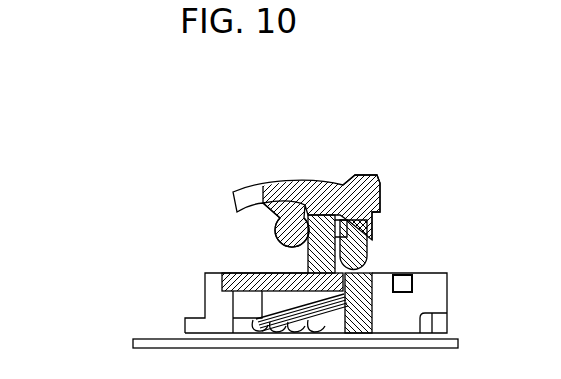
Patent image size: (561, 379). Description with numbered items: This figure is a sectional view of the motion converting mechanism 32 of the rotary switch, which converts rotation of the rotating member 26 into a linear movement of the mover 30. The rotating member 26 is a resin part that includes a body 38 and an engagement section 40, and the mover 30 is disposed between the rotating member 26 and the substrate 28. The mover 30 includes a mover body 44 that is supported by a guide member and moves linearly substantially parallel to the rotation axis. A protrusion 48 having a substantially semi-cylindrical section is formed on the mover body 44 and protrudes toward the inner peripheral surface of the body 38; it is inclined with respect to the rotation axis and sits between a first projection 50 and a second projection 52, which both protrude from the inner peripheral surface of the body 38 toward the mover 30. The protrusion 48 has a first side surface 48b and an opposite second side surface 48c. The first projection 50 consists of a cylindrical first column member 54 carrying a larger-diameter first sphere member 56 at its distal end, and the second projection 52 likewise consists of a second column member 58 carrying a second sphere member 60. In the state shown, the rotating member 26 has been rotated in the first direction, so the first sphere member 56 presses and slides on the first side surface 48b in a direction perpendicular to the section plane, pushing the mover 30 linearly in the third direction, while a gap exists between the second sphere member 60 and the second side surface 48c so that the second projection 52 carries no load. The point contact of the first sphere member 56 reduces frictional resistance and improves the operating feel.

The rotating member 26 is at (287, 177).
The body 38 is at (310, 182).
The motion converting mechanism 32 is at (392, 130).
The engagement section 40 is at (373, 172).
The first side surface 48b is at (382, 207).
The first column member 54 is at (380, 230).
The first sphere member 56 is at (375, 256).
The first projection 50 is at (437, 264).
The second column member 58 is at (285, 205).
The second sphere member 60 is at (278, 226).
The second projection 52 is at (200, 224).
The protrusion 48 is at (288, 247).
The second side surface 48c is at (305, 265).
The substrate 28 is at (162, 339).
The mover 30 is at (432, 288).
The mover body 44 is at (430, 305).